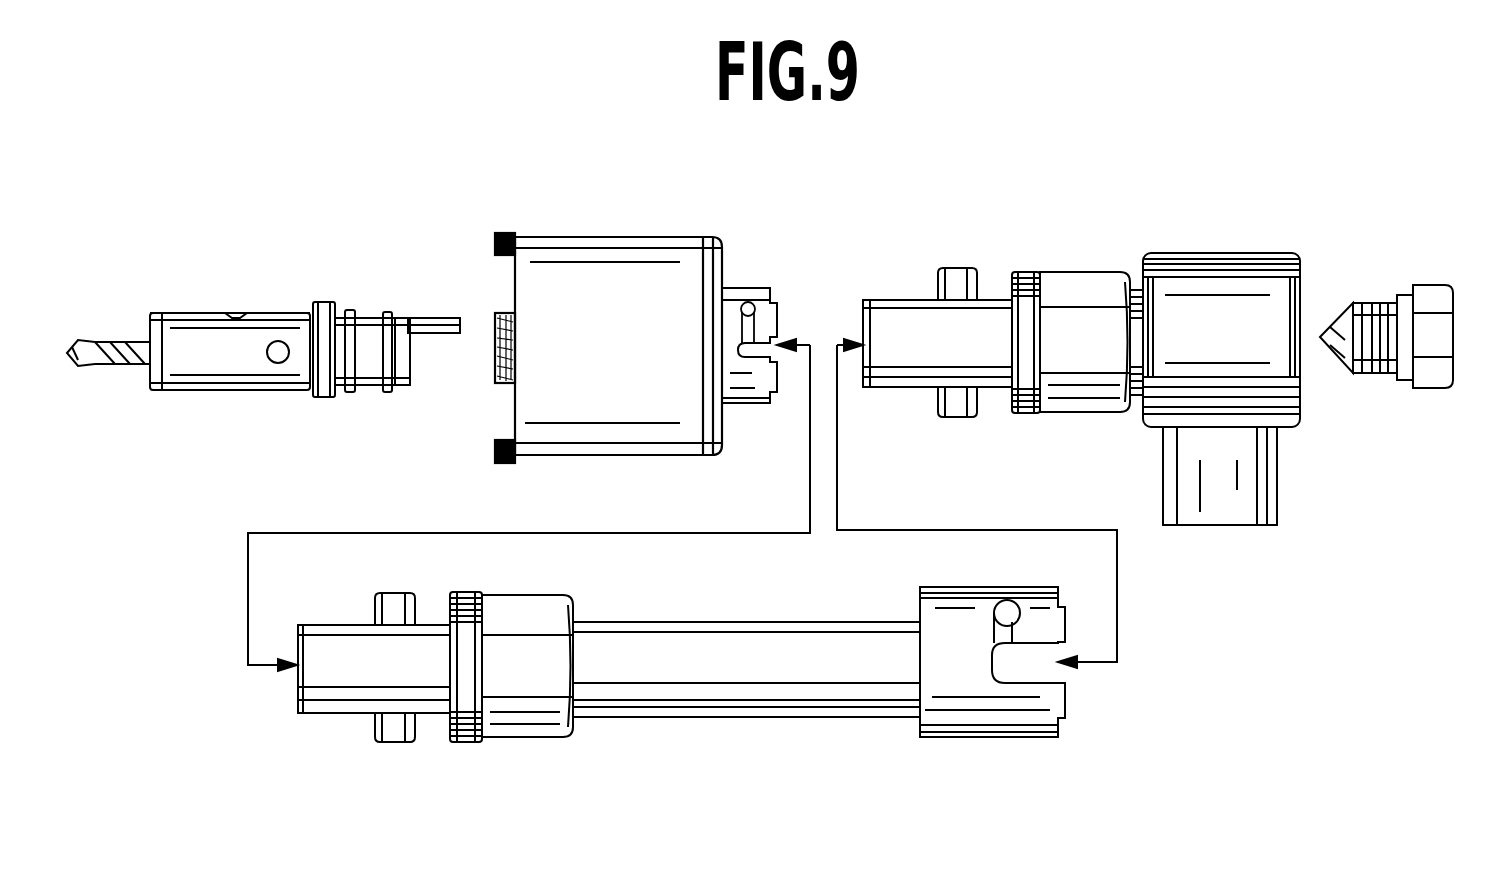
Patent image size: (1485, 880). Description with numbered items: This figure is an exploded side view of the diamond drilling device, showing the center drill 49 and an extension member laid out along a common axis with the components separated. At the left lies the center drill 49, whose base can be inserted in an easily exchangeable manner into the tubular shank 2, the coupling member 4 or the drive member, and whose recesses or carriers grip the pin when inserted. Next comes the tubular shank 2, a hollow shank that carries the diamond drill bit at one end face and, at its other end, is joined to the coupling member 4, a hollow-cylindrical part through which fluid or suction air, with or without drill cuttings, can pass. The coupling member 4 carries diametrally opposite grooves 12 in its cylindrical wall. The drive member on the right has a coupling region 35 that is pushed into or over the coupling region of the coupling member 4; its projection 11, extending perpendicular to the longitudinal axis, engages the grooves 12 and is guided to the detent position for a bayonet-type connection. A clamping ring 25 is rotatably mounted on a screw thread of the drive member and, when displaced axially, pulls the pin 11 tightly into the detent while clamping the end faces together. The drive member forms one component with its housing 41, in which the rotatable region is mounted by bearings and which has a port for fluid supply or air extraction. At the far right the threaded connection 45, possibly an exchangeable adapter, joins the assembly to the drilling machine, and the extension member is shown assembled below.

The tubular shank 2 is at (603, 280).
The coupling member 4 is at (775, 315).
The projection 11 is at (978, 283).
The grooves 12 is at (745, 330).
The clamping ring 25 is at (1080, 297).
The coupling region 35 is at (915, 328).
The housing 41 is at (1235, 285).
The threaded connection 45 is at (1397, 297).
The center drill 49 is at (262, 300).